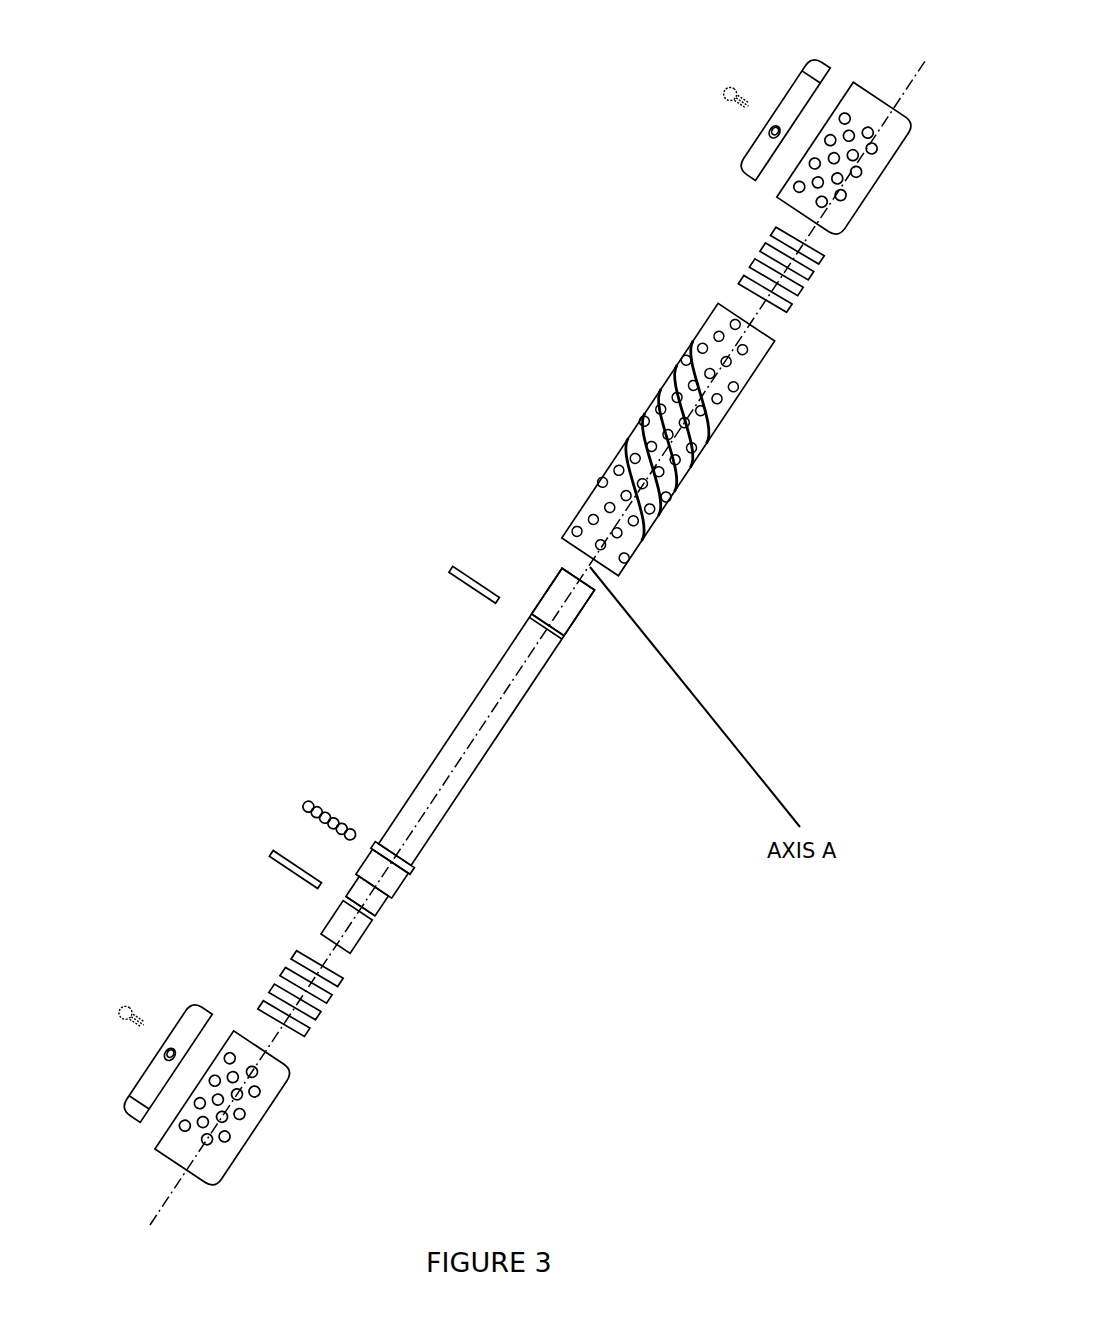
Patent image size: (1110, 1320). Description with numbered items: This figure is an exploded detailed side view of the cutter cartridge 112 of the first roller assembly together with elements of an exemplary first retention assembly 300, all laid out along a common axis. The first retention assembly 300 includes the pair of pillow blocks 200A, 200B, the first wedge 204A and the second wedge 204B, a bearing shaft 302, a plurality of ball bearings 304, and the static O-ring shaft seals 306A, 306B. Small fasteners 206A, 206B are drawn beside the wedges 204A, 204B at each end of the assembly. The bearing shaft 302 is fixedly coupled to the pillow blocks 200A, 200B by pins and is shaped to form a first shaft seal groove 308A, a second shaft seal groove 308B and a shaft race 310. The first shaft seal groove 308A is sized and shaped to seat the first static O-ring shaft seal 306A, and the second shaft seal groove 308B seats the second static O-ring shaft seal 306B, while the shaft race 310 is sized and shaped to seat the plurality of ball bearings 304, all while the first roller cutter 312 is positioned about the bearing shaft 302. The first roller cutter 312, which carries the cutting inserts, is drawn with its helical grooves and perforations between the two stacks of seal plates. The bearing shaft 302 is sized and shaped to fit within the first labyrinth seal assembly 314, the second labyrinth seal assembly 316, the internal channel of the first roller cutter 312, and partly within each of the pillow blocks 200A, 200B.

The cutter cartridge 112 is at (178, 535).
The pillow block 200A is at (265, 1113).
The pillow block 200B is at (895, 168).
The first wedge 204A is at (178, 1008).
The second wedge 204B is at (770, 118).
The first screw 206A is at (115, 1008).
The second screw 206B is at (723, 110).
The first retention assembly 300 is at (322, 425).
The bearing shaft 302 is at (467, 792).
The plurality of ball bearings 304 is at (312, 800).
The first static O-ring shaft seal 306A is at (270, 855).
The second static O-ring shaft seal 306B is at (455, 572).
The first shaft seal groove 308A is at (368, 940).
The second shaft seal groove 308B is at (560, 638).
The shaft race 310 is at (363, 862).
The first roller cutter 312 is at (643, 401).
The first labyrinth seal assembly 314 is at (340, 1022).
The second labyrinth seal assembly 316 is at (818, 335).